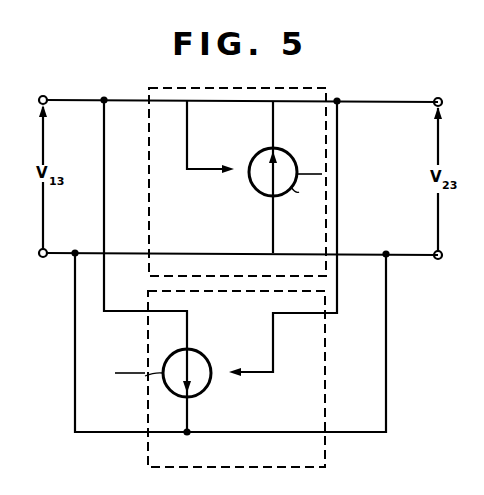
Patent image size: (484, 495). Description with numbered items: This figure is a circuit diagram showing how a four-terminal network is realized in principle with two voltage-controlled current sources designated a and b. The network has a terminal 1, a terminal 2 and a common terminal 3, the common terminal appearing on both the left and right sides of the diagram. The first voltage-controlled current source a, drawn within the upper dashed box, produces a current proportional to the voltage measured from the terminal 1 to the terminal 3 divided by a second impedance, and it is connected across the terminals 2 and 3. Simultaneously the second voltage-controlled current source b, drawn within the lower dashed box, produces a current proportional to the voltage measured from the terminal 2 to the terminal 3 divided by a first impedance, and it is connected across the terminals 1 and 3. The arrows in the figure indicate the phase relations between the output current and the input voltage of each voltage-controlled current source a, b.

The terminal 1 is at (43, 96).
The terminal 2 is at (450, 90).
The terminal 3 is at (41, 257).
The voltage-controlled current source a is at (288, 88).
The voltage-controlled current source b is at (326, 443).